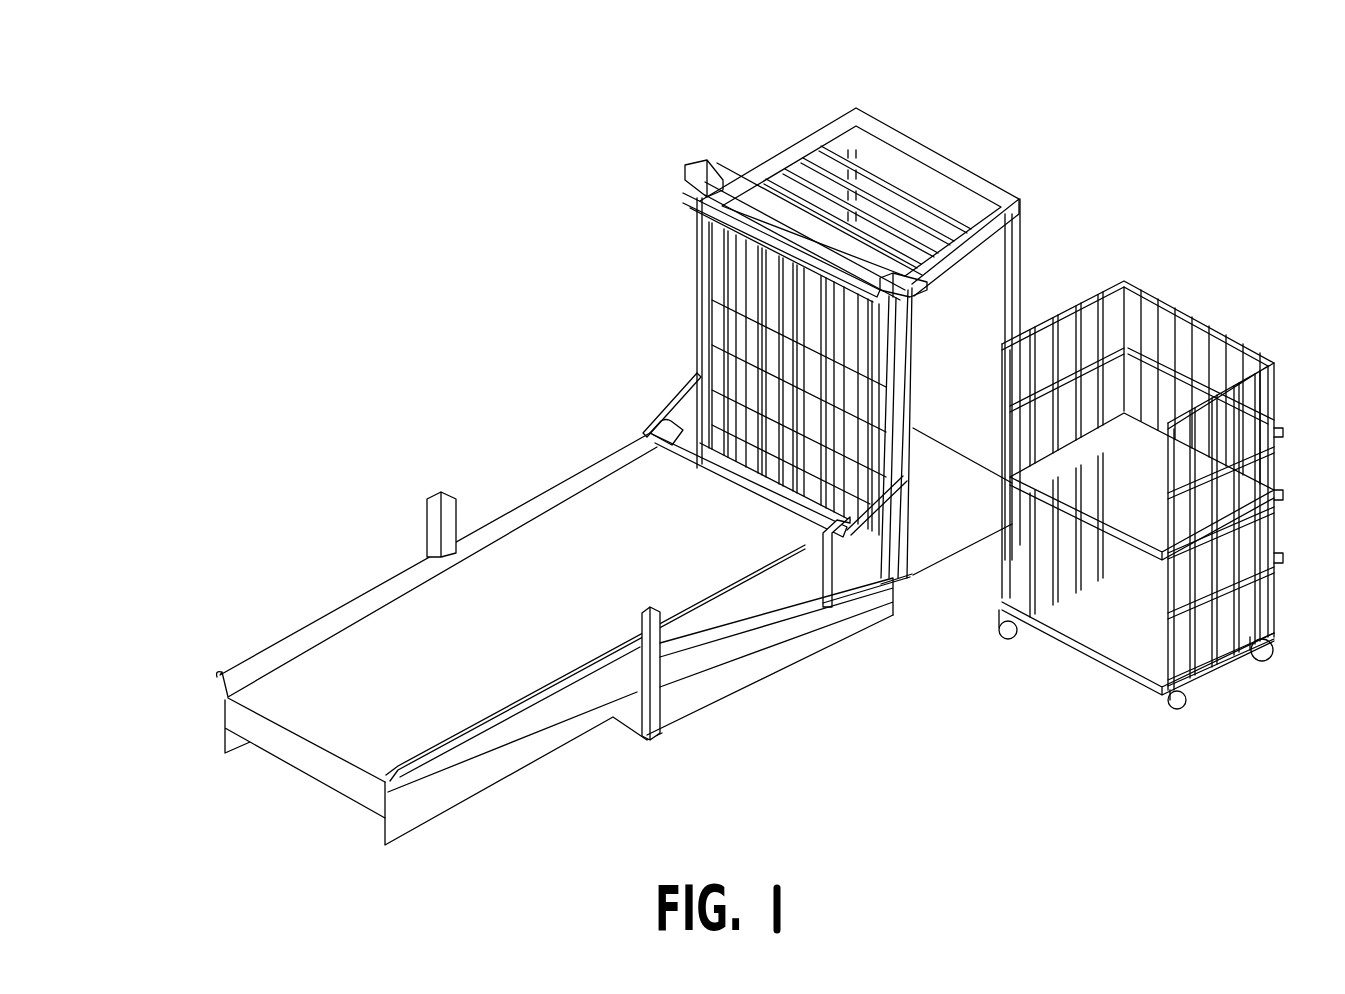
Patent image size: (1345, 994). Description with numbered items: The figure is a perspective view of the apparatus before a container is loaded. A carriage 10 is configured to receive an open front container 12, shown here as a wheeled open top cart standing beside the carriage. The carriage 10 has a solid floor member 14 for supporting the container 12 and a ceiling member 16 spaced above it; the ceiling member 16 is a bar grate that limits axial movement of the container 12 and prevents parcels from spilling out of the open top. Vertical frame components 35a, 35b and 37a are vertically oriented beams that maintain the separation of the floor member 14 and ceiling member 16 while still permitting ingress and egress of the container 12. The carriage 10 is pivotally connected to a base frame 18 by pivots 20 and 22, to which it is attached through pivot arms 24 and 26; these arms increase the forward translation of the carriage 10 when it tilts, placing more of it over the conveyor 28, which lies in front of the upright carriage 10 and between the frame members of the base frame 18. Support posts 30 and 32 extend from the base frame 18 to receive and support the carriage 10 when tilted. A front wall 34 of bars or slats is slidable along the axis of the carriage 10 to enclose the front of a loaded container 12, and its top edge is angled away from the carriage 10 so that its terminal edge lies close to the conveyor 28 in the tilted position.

The carriage 10 is at (752, 96).
The open front container 12 is at (1238, 307).
The floor member 14 is at (977, 540).
The ceiling member 16 is at (911, 200).
The base frame 18 is at (705, 712).
The pivot 20 is at (847, 533).
The pivot 22 is at (640, 423).
The pivot arm 24 is at (910, 553).
The pivot arm 26 is at (667, 403).
The conveyor 28 is at (290, 765).
The support post 30 is at (620, 667).
The support post 32 is at (433, 492).
The front wall 34 is at (877, 297).
The vertical frame component 35a is at (920, 352).
The vertical frame component 35b is at (1020, 305).
The vertical frame component 37a is at (702, 313).